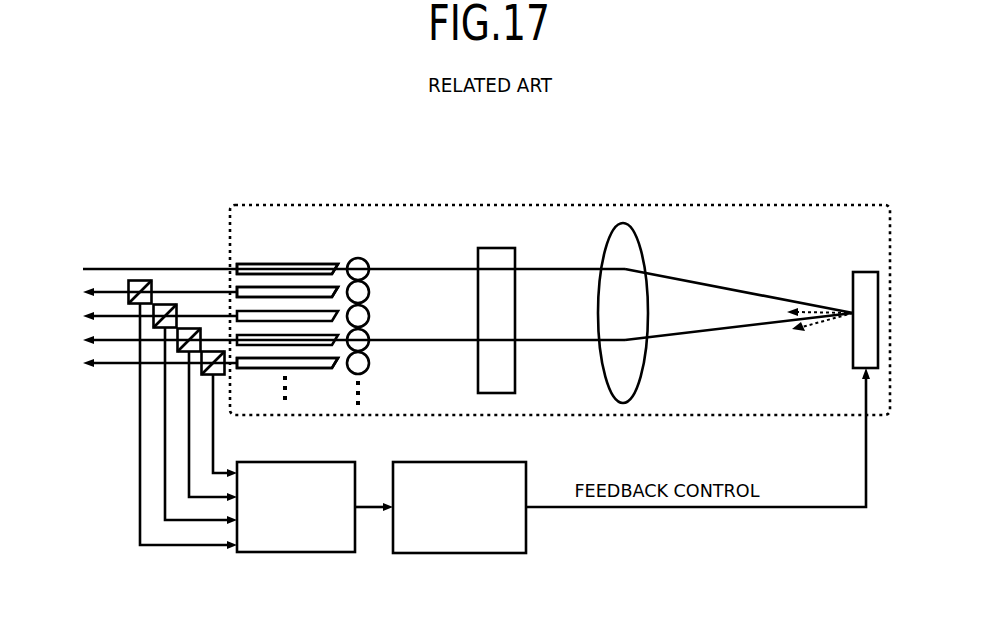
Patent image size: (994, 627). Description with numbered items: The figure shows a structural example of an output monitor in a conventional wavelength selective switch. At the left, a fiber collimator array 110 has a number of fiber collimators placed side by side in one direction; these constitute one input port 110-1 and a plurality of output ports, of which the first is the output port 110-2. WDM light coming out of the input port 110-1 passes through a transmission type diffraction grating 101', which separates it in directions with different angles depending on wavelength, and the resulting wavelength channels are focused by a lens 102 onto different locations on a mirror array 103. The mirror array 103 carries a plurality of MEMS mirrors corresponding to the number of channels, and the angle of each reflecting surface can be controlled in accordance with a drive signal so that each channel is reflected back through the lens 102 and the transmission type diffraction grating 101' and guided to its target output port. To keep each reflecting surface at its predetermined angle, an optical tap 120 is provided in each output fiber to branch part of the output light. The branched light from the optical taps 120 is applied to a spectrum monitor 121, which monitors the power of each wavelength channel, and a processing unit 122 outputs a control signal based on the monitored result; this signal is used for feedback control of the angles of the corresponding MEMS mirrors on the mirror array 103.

The fiber collimator array 110 is at (298, 248).
The input port 110-1 is at (273, 262).
The output port 110-2 is at (278, 281).
The optical tap 120 is at (213, 352).
The transmission type diffraction grating 101' is at (476, 278).
The lens 102 is at (613, 226).
The mirror array 103 is at (863, 272).
The spectrum monitor 121 is at (290, 552).
The processing unit 122 is at (452, 553).